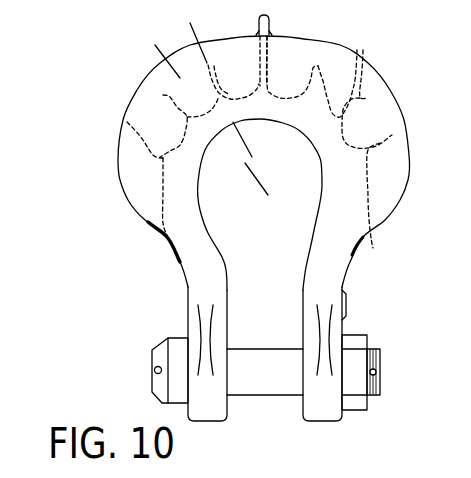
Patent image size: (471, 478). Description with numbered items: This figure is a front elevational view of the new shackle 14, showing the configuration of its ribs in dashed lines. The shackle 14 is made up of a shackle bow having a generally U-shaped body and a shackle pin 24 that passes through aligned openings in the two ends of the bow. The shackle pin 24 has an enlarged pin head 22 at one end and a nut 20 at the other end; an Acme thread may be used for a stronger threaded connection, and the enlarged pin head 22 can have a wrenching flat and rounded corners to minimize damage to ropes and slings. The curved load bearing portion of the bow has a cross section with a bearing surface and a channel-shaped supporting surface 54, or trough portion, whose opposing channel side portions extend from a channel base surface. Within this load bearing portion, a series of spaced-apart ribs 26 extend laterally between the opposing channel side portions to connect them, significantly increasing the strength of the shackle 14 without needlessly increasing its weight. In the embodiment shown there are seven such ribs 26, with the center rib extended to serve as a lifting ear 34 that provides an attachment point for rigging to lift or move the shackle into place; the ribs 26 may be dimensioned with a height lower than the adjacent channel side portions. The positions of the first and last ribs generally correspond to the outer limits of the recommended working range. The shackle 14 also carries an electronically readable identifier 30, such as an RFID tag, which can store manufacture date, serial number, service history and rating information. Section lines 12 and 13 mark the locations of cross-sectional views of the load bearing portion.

The cross-section line 12 is at (165, 50).
The cross-section line 13 is at (182, 35).
The shackle 14 is at (394, 80).
The nut 20 is at (367, 340).
The enlarged pin head 22 is at (157, 388).
The shackle pin 24 is at (253, 389).
The ribs 26 is at (160, 158).
The electronically readable identifier 30 is at (346, 302).
The lifting ear 34 is at (269, 23).
The channel-shaped supporting surface 54 is at (365, 129).